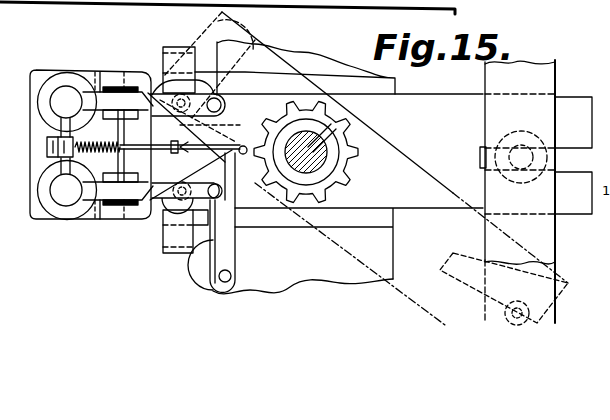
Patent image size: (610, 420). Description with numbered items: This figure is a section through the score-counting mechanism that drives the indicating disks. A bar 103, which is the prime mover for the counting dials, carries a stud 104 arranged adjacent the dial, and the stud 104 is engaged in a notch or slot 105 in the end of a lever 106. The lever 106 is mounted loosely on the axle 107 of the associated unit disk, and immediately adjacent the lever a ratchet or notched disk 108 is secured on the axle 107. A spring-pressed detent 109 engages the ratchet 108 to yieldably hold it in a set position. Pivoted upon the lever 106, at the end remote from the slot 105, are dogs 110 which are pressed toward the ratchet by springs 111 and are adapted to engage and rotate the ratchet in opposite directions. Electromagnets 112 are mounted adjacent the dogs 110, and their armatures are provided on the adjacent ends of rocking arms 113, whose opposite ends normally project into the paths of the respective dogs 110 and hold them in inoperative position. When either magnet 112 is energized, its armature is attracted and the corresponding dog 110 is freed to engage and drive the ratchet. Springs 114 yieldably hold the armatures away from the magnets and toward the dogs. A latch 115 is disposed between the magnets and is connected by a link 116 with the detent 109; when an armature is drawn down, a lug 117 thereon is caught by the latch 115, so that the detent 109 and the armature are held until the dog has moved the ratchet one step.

The bar 103 is at (556, 82).
The stud 104 is at (542, 110).
The notch or slot 105 is at (568, 160).
The lever 106 is at (418, 208).
The axle 107 is at (334, 85).
The ratchet or notched disk 108 is at (340, 170).
The spring-pressed detent 109 is at (234, 258).
The dog 110 is at (226, 116).
The spring 111 is at (158, 135).
The electromagnet 112 is at (80, 61).
The rocking arm 113 is at (96, 80).
The spring 114 is at (151, 84).
The latch 115 is at (47, 147).
The link 116 is at (116, 142).
The lug 117 is at (46, 112).